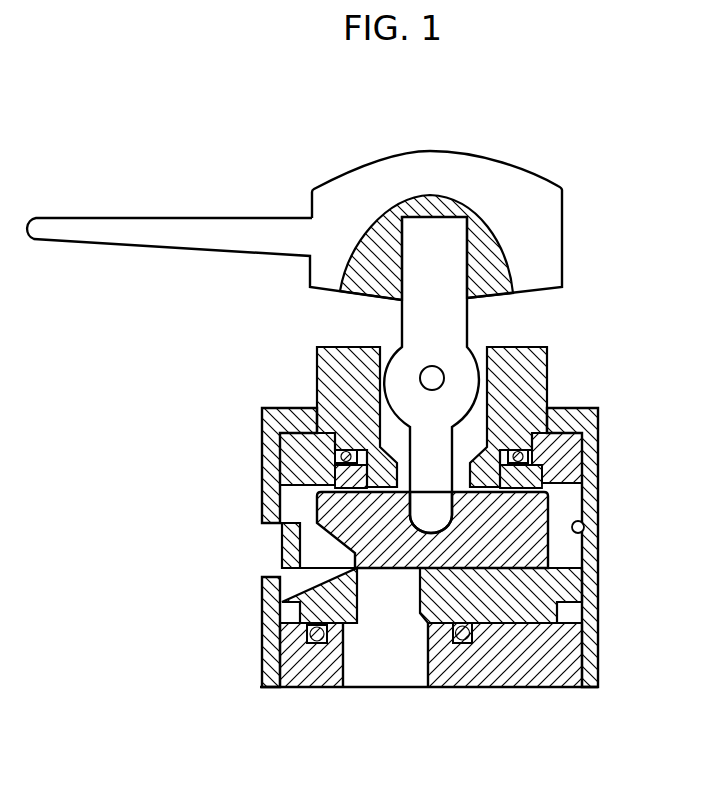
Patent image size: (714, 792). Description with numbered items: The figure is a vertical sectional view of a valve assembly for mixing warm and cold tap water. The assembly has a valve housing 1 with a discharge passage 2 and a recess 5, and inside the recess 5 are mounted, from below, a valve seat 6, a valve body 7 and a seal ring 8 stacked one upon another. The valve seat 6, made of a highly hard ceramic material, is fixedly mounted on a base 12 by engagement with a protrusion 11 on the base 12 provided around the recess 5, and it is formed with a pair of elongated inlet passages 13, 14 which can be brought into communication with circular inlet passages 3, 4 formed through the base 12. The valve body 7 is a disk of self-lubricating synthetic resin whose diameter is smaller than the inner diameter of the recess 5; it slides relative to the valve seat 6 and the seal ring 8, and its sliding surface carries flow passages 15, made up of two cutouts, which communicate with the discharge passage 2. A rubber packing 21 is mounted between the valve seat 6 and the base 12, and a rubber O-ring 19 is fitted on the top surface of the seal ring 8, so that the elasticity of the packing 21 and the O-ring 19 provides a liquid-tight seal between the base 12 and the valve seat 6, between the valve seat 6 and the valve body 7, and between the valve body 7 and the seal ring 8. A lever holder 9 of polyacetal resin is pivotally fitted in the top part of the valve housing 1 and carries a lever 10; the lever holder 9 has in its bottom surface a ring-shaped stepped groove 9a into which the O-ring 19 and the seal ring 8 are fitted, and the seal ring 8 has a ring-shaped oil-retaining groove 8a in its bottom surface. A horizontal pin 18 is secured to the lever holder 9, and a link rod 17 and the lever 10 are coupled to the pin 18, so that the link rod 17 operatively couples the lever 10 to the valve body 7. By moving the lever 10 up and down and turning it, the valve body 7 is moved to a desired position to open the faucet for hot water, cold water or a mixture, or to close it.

The valve housing 1 is at (572, 412).
The discharge passage 2 is at (280, 537).
The circular inlet passage 3 is at (385, 690).
The circular inlet passage 4 is at (392, 660).
The recess 5 is at (584, 527).
The valve seat 6 is at (540, 595).
The valve body 7 is at (335, 505).
The seal ring 8 is at (535, 468).
The oil-retaining groove 8a is at (522, 482).
The lever holder 9 is at (512, 352).
The stepped groove 9a is at (535, 452).
The lever 10 is at (95, 218).
The protrusion 11 is at (520, 605).
The base 12 is at (520, 655).
The inlet passage 13 is at (215, 645).
The inlet passage 14 is at (271, 632).
The flow passages 15 is at (312, 533).
The link rod 17 is at (415, 306).
The pin 18 is at (420, 378).
The O-ring 19 is at (345, 455).
The packing 21 is at (320, 645).